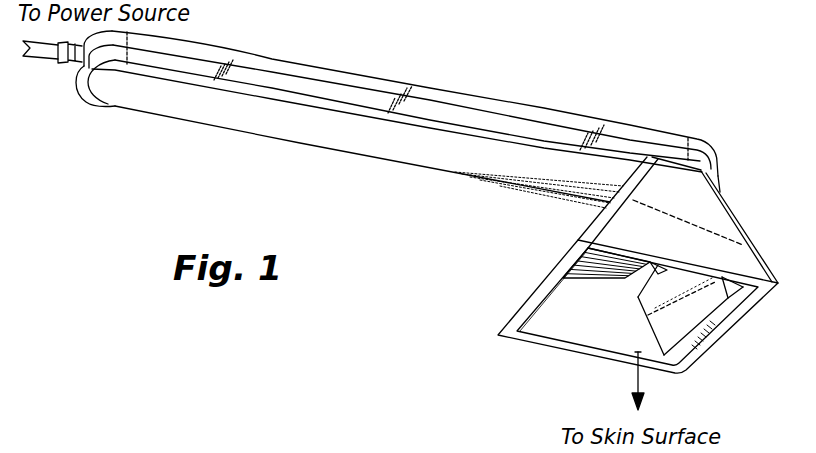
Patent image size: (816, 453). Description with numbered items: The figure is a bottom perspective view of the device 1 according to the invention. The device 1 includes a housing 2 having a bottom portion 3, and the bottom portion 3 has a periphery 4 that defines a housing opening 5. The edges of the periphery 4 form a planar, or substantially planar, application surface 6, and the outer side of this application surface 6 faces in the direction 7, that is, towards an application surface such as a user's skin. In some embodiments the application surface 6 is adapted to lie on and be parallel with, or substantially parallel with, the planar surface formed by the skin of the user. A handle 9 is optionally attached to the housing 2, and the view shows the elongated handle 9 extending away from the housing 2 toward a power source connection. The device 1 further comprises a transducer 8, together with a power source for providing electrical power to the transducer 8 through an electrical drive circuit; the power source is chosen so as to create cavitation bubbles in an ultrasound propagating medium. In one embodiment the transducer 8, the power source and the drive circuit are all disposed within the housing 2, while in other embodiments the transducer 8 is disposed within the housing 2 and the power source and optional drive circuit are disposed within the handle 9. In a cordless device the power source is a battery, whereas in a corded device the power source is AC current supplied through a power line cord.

The device 1 is at (539, 77).
The housing 2 is at (729, 196).
The bottom portion 3 is at (655, 256).
The periphery 4 is at (552, 278).
The housing opening 5 is at (588, 320).
The planar application surface 6 is at (546, 297).
The direction 7 is at (642, 372).
The transducer 8 is at (697, 333).
The handle 9 is at (219, 134).